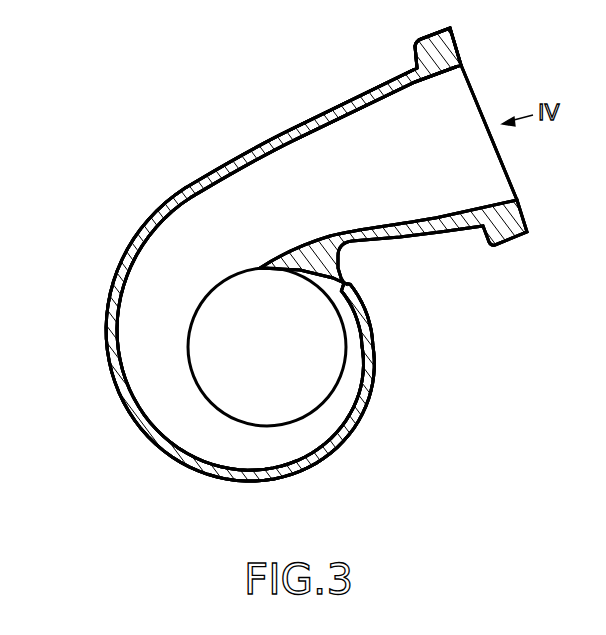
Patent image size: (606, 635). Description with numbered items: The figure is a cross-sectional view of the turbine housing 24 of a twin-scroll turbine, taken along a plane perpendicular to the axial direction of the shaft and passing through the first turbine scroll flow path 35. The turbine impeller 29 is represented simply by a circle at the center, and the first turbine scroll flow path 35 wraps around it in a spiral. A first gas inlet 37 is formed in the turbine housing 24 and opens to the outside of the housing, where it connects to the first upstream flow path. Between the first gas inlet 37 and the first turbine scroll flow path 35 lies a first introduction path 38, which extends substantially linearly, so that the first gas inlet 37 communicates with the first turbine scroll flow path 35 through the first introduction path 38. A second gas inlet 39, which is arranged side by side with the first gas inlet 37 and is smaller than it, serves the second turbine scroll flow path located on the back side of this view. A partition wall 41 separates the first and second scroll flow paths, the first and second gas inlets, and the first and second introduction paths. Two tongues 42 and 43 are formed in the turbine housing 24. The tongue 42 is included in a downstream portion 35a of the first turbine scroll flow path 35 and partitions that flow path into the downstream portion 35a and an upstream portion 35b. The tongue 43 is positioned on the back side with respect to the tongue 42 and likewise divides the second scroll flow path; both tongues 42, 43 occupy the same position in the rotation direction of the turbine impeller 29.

The turbine housing 24 is at (352, 98).
The turbine impeller 29 is at (330, 392).
The first turbine scroll flow path 35 is at (147, 382).
The downstream portion 35a is at (313, 280).
The upstream portion 35b is at (188, 263).
The first gas inlet 37 is at (469, 76).
The first introduction path 38 is at (323, 153).
The second gas inlet 39 is at (478, 101).
The partition wall 41 is at (252, 203).
The tongue 42 is at (260, 270).
The tongue 43 is at (263, 272).